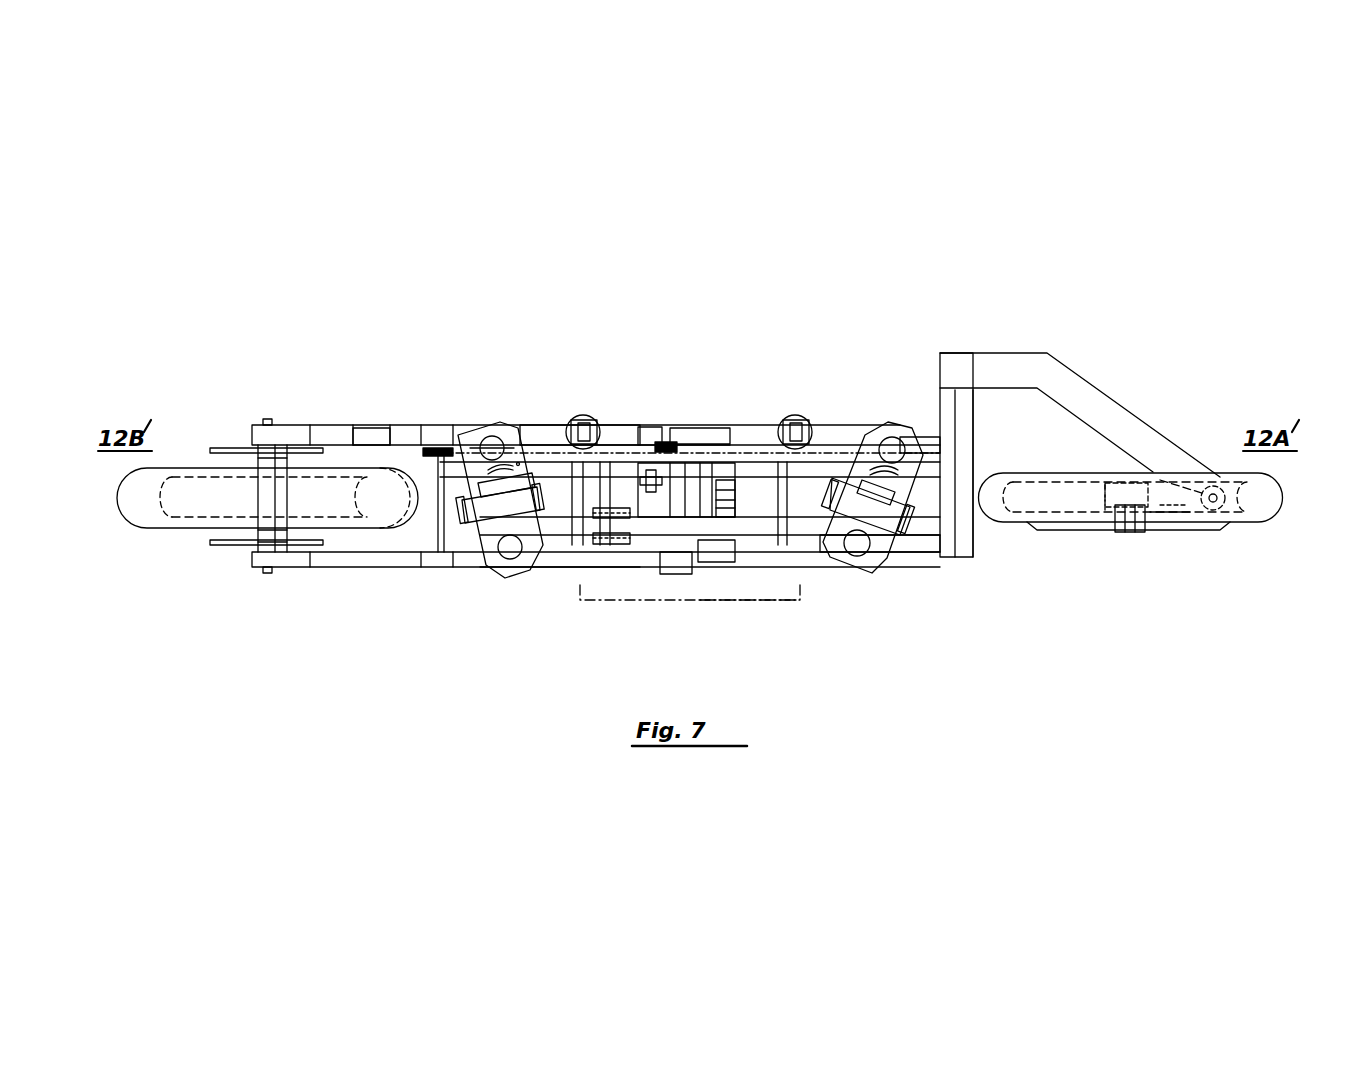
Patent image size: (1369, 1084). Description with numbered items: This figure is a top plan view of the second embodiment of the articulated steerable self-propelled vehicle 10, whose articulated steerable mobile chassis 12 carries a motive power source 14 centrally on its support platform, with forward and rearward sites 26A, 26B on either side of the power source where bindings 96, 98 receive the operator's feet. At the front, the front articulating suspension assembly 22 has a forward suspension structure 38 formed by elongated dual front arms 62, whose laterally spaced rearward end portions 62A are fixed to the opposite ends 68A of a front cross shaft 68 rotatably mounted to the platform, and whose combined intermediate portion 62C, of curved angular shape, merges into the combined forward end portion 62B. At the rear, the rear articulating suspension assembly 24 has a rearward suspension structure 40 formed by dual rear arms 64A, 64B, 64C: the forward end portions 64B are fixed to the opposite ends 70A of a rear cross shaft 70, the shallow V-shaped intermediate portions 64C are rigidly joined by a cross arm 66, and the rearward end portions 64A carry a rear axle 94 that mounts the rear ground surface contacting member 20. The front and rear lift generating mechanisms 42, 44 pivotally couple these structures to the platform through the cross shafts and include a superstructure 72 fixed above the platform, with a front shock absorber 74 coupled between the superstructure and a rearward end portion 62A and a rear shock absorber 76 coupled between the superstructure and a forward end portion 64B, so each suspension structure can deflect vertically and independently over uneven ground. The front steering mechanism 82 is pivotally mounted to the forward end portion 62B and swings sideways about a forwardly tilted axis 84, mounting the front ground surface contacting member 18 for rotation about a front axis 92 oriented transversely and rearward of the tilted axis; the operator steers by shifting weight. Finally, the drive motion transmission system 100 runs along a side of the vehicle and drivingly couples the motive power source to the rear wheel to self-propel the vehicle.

The articulated steerable self-propelled vehicle 10 is at (778, 293).
The articulated steerable mobile chassis 12 is at (492, 318).
The motive power source 14 is at (625, 600).
The front ground surface contacting member 18 is at (1347, 501).
The rear ground surface contacting member 20 is at (130, 516).
The front articulating suspension assembly 22 is at (962, 350).
The rear articulating suspension assembly 24 is at (378, 418).
The forward site 26A is at (817, 505).
The rearward site 26B is at (470, 548).
The forward suspension structure 38 is at (1071, 284).
The rearward suspension structure 40 is at (405, 418).
The front lift generating mechanism 42 is at (772, 412).
The rear lift generating mechanism 44 is at (577, 412).
The dual front arms 62 is at (948, 560).
The rearward end portions of dual front arms 62A is at (844, 440).
The combined forward end portion of dual front arms 62B is at (1103, 410).
The combined intermediate portion of dual front arms 62C is at (970, 520).
The rearward end portions of dual rear arms 64A is at (332, 430).
The forward end portions of dual rear arms 64B is at (541, 437).
The intermediate portions of dual rear arms 64C is at (440, 440).
The cross arm 66 is at (432, 530).
The front cross shaft 68 is at (718, 503).
The opposite ends of front cross shaft 68A is at (700, 440).
The rear cross shaft 70 is at (677, 545).
The opposite ends of rear cross shaft 70A is at (676, 428).
The superstructure 72 is at (755, 602).
The front shock absorber 74 is at (795, 415).
The rear shock absorber 76 is at (583, 415).
The front steering mechanism 82 is at (1170, 532).
The axis 84 is at (1213, 488).
The front axis 92 is at (1128, 535).
The rear axle 94 is at (265, 507).
The binding 96 is at (909, 371).
The binding 98 is at (503, 548).
The drive motion transmission system 100 is at (232, 445).